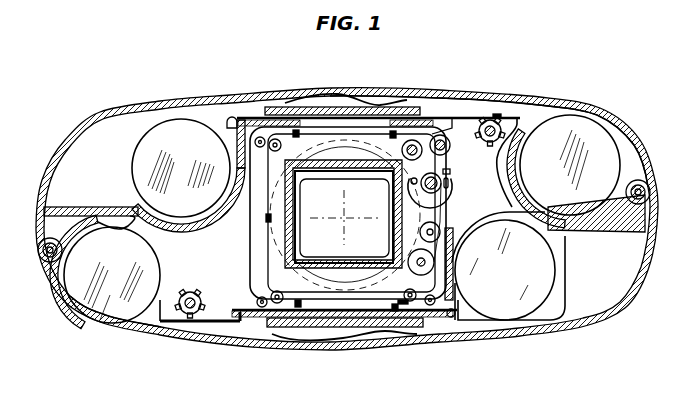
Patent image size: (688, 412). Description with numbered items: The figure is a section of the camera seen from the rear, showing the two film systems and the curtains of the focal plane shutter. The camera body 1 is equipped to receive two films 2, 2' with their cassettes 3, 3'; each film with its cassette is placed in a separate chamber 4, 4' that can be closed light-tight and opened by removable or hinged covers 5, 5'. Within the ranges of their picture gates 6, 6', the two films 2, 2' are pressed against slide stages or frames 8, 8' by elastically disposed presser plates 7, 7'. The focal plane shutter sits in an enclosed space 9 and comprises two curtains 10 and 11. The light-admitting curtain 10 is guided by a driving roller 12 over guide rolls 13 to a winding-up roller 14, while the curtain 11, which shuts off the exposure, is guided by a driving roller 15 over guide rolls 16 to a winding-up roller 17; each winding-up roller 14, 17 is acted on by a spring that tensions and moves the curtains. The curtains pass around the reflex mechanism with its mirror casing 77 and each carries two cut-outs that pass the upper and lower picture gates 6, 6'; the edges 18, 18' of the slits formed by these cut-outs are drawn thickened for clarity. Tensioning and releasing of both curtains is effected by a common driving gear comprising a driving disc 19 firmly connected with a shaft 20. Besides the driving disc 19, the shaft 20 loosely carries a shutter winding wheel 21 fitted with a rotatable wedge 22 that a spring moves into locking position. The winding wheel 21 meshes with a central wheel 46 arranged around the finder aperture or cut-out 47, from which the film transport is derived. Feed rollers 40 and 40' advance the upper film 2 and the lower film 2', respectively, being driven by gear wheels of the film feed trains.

The camera body 1 is at (82, 210).
The film 2 is at (196, 96).
The film 2' is at (182, 345).
The cassette 3 is at (380, 141).
The cassette 3' is at (324, 288).
The chamber 4 is at (372, 137).
The chamber 4' is at (347, 287).
The cover 5 is at (347, 215).
The cover 5' is at (99, 288).
The picture gate 6 is at (346, 85).
The picture gate 6' is at (344, 357).
The presser plate 7 is at (342, 90).
The presser plate 7' is at (345, 350).
The slide stage 8 is at (440, 110).
The slide stage 8' is at (462, 347).
The enclosed space 9 is at (226, 321).
The curtain 10 is at (318, 117).
The curtain 11 is at (330, 127).
The driving roller 12 is at (440, 126).
The guide rolls 13 is at (258, 138).
The winding-up roller 14 is at (463, 302).
The driving roller 15 is at (480, 120).
The guide rolls 16 is at (240, 125).
The winding-up roller 17 is at (454, 284).
The slit edge 18 is at (328, 224).
The slit edge 18' is at (345, 224).
The driving disc 19 is at (450, 172).
The shaft 20 is at (432, 193).
The shutter winding wheel 21 is at (446, 196).
The rotatable wedge 22 is at (449, 186).
The feed roller 40 is at (525, 91).
The feed roller 40' is at (161, 327).
The central wheel 46 is at (441, 236).
The finder aperture 47 is at (401, 306).
The mirror casing 77 is at (434, 262).